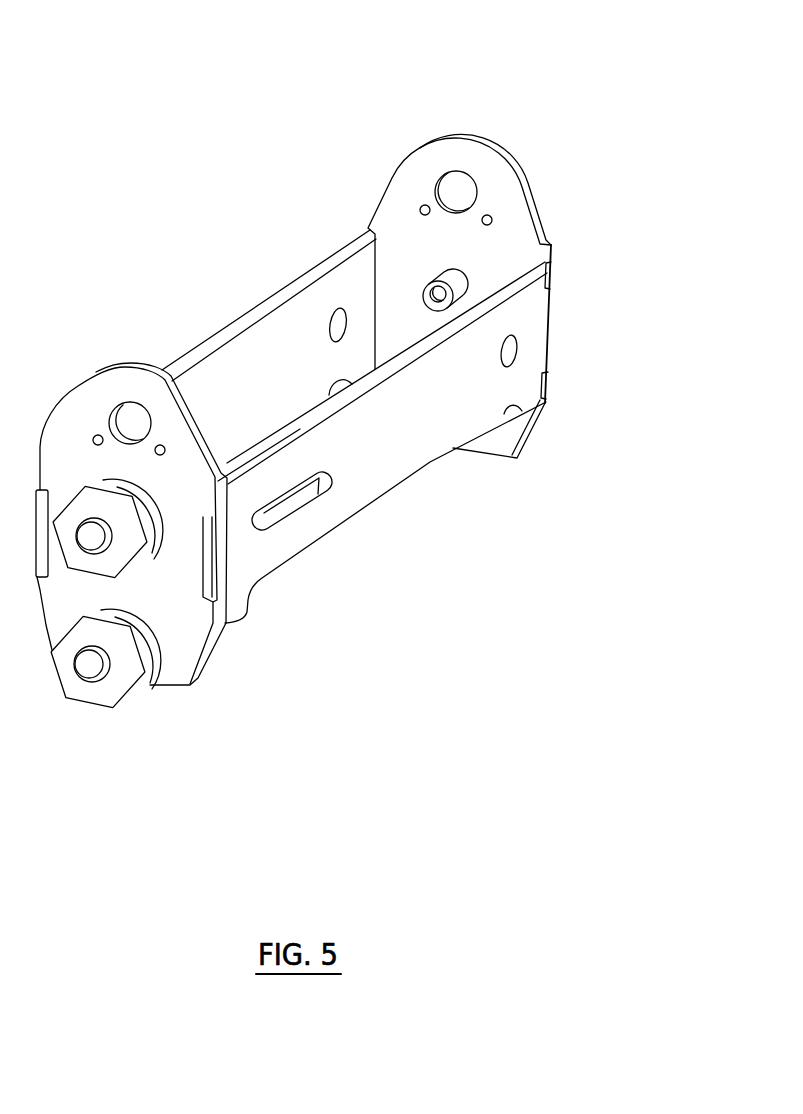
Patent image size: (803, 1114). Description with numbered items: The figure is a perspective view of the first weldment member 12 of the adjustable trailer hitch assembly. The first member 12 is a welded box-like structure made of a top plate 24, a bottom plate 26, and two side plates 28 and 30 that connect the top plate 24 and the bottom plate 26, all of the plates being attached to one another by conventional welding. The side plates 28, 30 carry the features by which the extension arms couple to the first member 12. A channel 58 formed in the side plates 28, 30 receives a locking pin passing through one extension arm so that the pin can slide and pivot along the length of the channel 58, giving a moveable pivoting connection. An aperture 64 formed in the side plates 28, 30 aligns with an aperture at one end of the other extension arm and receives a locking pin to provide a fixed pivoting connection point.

The first member 12 is at (473, 86).
The top plate 24 is at (177, 648).
The bottom plate 26 is at (508, 232).
The side plate 28 is at (407, 437).
The side plate 30 is at (240, 380).
The channel 58 is at (312, 530).
The aperture 64 is at (323, 297).